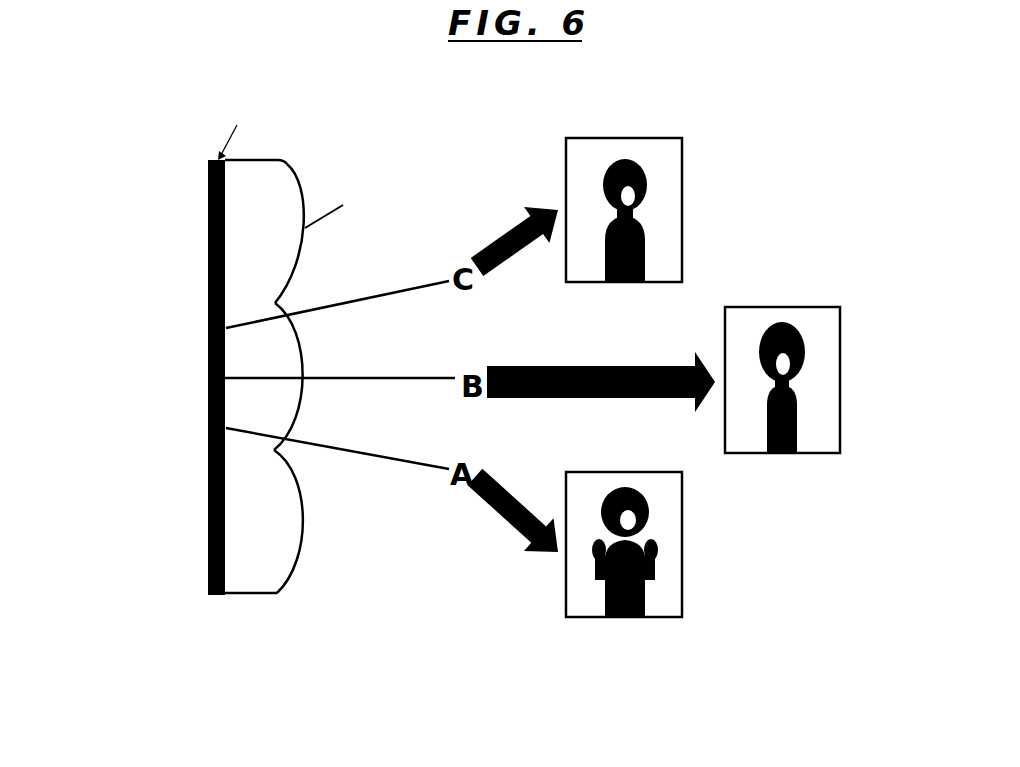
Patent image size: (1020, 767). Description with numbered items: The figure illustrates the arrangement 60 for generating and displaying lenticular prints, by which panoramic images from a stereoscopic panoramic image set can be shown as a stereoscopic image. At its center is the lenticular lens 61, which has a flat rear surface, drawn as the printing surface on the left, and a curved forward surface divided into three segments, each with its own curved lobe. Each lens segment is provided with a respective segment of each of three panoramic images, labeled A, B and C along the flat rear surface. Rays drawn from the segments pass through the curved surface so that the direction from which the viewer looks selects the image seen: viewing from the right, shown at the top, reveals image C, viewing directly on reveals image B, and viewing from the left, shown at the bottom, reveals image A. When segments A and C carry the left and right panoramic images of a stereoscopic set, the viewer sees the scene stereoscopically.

The lenticular print 60 is at (200, 644).
The lenticular lens 61 is at (277, 597).